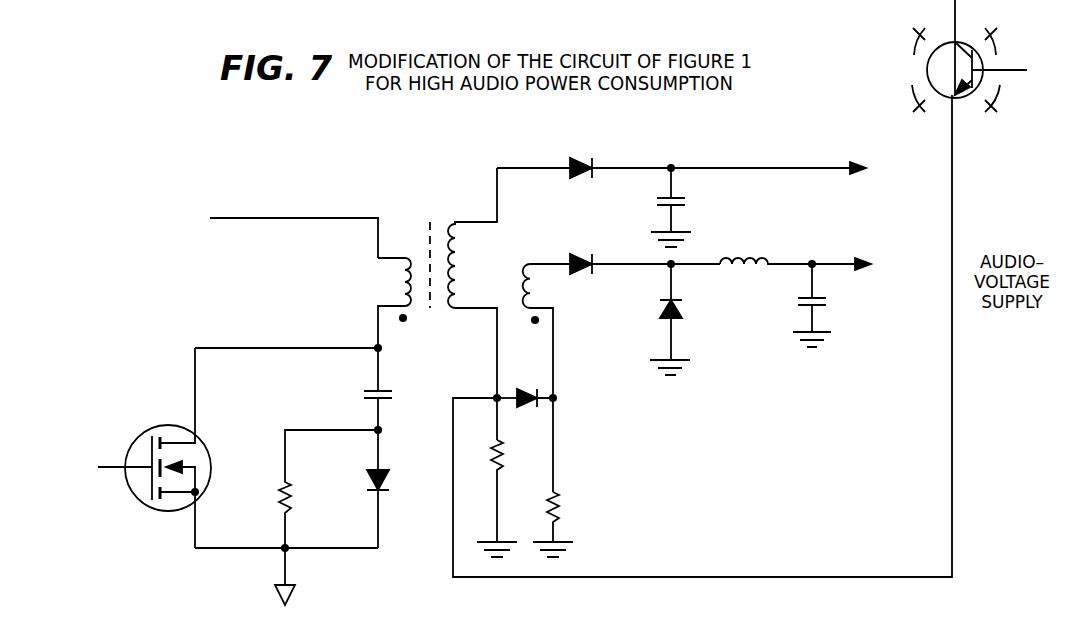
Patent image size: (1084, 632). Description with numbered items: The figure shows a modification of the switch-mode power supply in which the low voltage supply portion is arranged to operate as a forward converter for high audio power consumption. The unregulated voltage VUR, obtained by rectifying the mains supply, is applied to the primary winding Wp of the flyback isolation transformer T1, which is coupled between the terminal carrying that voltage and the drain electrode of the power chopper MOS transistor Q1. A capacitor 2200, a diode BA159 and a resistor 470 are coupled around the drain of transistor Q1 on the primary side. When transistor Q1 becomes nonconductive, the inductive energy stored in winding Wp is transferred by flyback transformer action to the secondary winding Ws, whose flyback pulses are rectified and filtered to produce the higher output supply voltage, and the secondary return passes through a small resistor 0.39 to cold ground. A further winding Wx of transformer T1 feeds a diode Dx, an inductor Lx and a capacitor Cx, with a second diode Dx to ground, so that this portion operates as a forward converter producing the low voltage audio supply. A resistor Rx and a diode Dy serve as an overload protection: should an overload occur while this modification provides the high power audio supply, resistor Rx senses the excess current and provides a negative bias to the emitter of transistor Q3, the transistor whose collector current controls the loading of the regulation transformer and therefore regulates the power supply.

The unregulated voltage VUR is at (303, 218).
The flyback isolation transformer T1 is at (469, 330).
The primary winding Wp is at (390, 303).
The secondary winding Ws is at (472, 304).
The auxiliary winding Wx is at (546, 378).
The diode Dx is at (645, 301).
The inductor Lx is at (802, 248).
The capacitor Cx is at (824, 305).
The capacitor 2200 is at (355, 387).
The diode BA159 is at (408, 487).
The resistor 470 is at (328, 489).
The power chopper MOS transistor Q1 is at (144, 448).
The diode Dy is at (525, 385).
The resistor 0.39 is at (514, 498).
The resistor Rx is at (563, 524).
The transistor Q3 is at (890, 70).